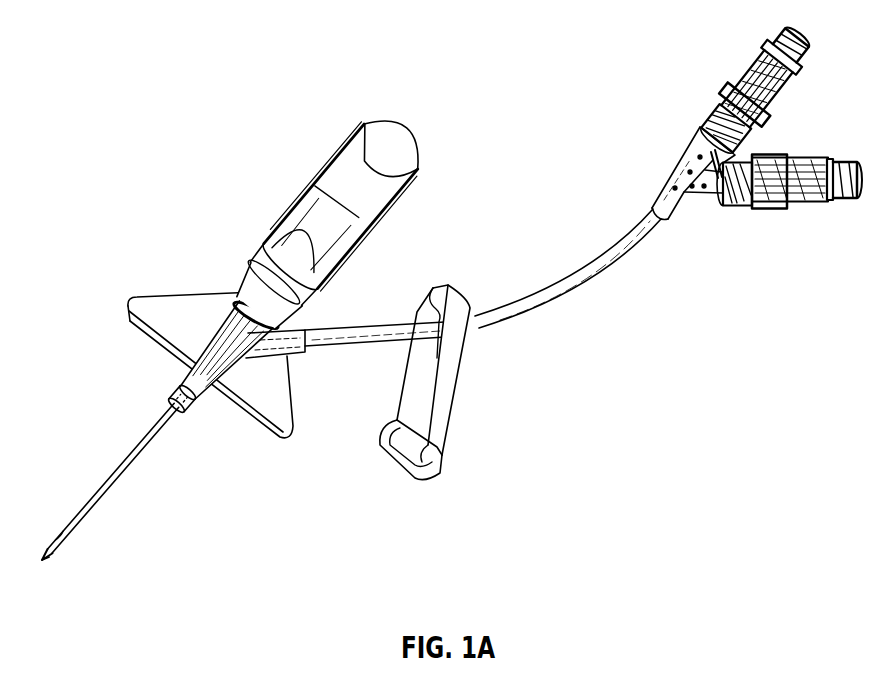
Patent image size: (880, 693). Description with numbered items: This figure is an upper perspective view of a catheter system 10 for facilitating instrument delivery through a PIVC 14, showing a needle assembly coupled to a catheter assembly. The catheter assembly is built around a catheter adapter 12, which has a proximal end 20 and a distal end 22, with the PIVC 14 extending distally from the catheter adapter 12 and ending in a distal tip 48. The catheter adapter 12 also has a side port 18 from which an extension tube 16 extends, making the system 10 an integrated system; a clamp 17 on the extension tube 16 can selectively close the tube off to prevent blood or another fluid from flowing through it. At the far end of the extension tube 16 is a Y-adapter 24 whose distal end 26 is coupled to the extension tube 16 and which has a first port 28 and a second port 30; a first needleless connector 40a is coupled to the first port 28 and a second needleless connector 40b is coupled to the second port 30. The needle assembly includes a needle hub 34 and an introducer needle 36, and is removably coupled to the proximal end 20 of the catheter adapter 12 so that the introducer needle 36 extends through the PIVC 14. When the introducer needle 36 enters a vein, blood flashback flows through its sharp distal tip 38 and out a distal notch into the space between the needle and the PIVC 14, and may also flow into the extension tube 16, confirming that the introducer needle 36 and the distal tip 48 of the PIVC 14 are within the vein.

The system 10 is at (327, 50).
The catheter adapter 12 is at (208, 350).
The PIVC 14 is at (105, 492).
The extension tube 16 is at (382, 330).
The clamp 17 is at (432, 397).
The side port 18 is at (284, 330).
The proximal end 20 is at (247, 313).
The distal end 22 is at (170, 394).
The Y-adapter 24 is at (682, 210).
The distal end 26 is at (655, 212).
The first port 28 is at (697, 157).
The second port 30 is at (718, 198).
The needle hub 34 is at (332, 182).
The introducer needle 36 is at (47, 558).
The sharp distal tip 38 is at (42, 565).
The first needleless connector 40a is at (728, 88).
The second needleless connector 40b is at (763, 208).
The distal tip 48 is at (60, 536).